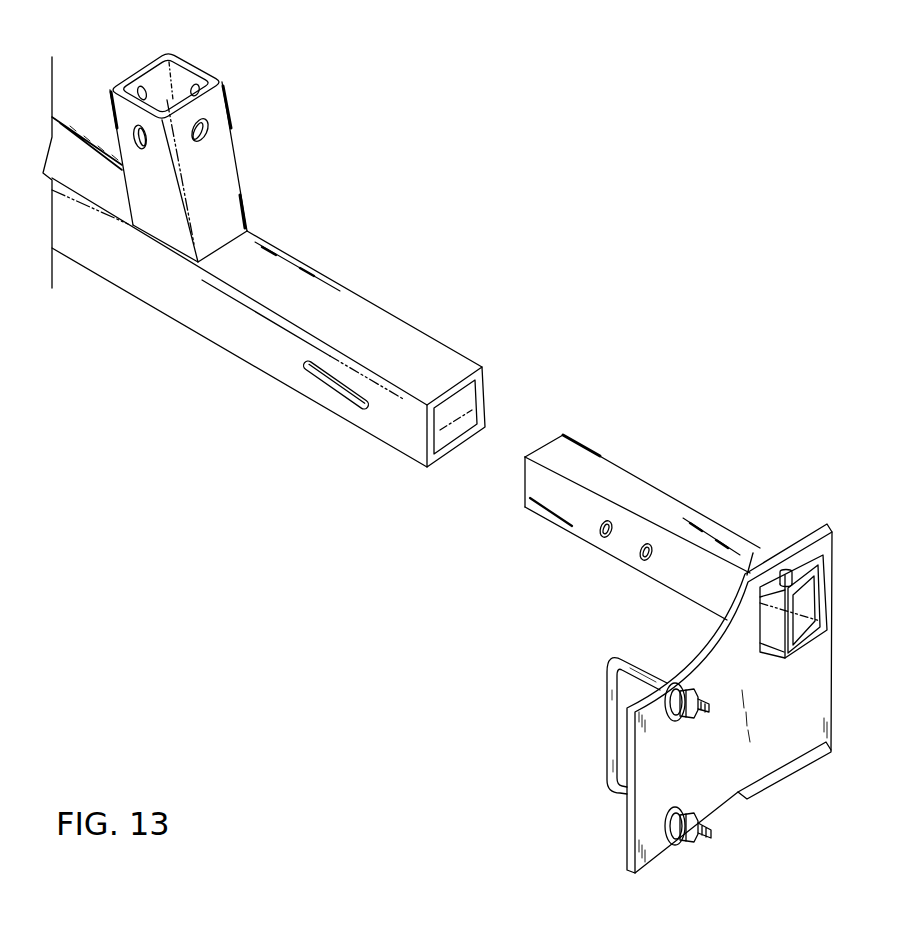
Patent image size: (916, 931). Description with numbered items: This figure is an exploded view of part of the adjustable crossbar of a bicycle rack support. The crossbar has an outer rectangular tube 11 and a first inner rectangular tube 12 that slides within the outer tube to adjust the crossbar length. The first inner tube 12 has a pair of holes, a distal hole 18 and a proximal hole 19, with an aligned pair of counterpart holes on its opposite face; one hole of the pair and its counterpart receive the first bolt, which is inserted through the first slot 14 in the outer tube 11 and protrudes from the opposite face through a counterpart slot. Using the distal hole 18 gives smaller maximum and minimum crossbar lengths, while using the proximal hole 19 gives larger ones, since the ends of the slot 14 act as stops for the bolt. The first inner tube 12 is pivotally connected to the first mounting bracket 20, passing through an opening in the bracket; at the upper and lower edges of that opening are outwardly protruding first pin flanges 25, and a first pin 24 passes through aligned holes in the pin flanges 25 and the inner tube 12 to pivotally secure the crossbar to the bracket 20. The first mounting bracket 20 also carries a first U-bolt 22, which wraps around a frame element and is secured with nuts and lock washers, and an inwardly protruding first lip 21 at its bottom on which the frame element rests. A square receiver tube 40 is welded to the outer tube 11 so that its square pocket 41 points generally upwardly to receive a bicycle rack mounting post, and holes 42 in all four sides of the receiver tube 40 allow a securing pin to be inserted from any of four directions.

The outer rectangular tube 11 is at (347, 310).
The first inner rectangular tube 12 is at (598, 467).
The first slot 14 is at (333, 383).
The distal hole 18 is at (640, 558).
The proximal hole 19 is at (600, 536).
The first mounting bracket 20 is at (817, 697).
The first lip 21 is at (767, 784).
The first U-bolt 22 is at (608, 661).
The first pin 24 is at (834, 554).
The first pin flanges 25 is at (830, 658).
The square receiver tube 40 is at (227, 193).
The square pocket 41 is at (173, 86).
The holes 42 is at (205, 125).